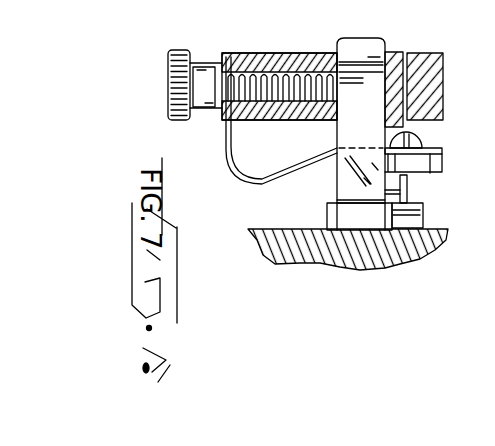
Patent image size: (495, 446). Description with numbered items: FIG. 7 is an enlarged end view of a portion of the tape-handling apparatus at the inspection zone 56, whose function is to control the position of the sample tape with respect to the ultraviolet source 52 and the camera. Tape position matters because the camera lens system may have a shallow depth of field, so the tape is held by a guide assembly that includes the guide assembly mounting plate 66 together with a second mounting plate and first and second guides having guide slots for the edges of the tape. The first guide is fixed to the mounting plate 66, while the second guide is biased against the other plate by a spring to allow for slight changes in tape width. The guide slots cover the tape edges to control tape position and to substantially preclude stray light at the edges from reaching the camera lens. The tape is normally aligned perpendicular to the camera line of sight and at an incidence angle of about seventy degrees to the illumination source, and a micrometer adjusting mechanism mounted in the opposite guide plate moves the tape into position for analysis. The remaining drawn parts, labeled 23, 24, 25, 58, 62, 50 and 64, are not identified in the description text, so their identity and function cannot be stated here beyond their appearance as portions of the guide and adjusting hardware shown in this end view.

The adjustment knob 23 is at (193, 110).
The conduit tube 24 is at (262, 183).
The lead screw 25 is at (279, 86).
The nut body 58 is at (388, 37).
The inspection zone 56 is at (414, 76).
The mounting block 62 is at (442, 53).
The ultraviolet source 52 is at (434, 169).
The clamp bracket 50 is at (450, 190).
The guide assembly mounting plate 66 is at (402, 262).
The base 64 is at (302, 262).